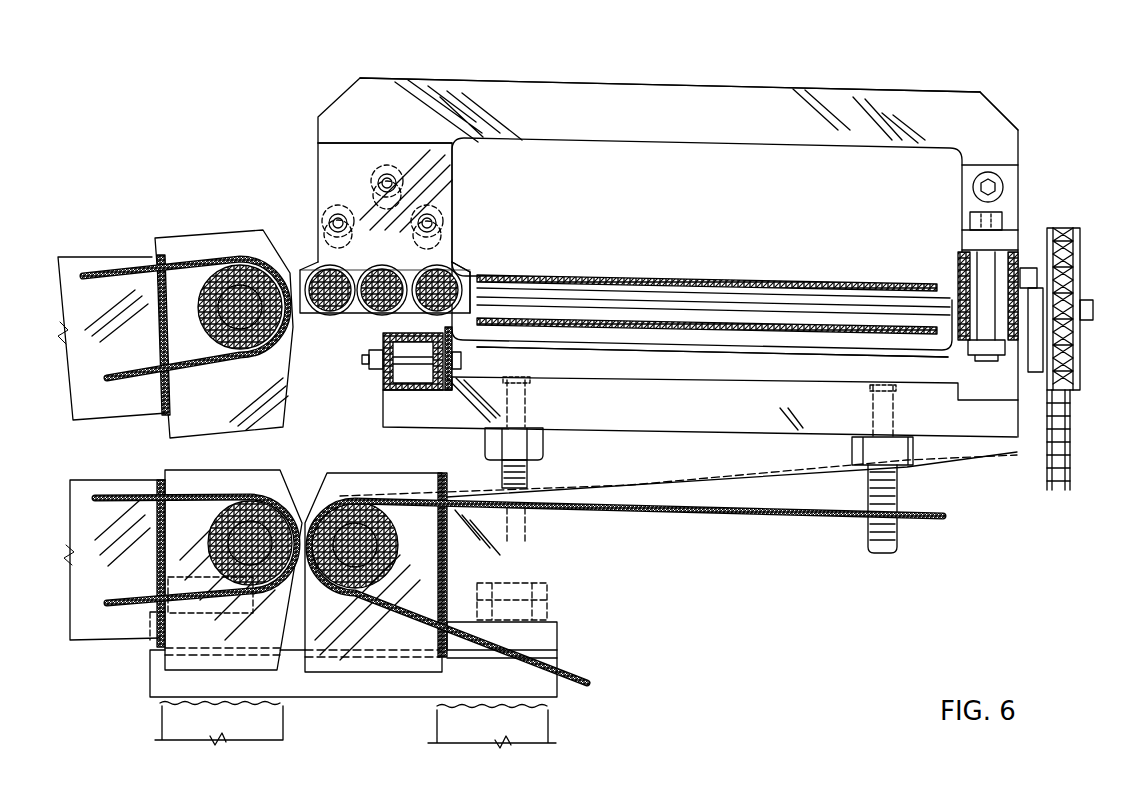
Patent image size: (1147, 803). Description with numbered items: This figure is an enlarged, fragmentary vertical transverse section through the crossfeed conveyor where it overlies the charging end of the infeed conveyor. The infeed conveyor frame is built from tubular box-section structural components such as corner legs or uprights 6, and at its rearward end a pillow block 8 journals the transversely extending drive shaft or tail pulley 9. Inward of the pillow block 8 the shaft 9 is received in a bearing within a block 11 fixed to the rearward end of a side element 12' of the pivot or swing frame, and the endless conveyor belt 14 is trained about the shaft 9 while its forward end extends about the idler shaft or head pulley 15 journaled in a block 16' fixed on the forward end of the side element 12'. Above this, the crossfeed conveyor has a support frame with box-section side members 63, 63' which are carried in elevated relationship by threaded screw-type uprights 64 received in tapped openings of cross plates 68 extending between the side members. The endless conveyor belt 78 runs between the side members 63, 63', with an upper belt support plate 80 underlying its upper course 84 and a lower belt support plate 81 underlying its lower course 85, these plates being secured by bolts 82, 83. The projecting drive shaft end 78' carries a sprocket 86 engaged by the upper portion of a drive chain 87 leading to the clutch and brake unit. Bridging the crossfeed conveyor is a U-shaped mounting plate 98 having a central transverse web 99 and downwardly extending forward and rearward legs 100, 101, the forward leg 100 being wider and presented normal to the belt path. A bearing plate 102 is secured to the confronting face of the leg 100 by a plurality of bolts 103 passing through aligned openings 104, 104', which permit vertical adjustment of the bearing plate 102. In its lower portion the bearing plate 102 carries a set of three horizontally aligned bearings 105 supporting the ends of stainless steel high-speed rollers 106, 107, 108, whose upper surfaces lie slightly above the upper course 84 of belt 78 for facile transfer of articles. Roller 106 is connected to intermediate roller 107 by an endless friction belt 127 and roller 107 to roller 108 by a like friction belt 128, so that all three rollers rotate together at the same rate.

The U-shaped mounting plate 98 is at (659, 82).
The central transverse web 99 is at (692, 93).
The rearward leg 101 is at (1018, 142).
The forward leg 100 is at (318, 127).
The bearing plate 102 is at (348, 142).
The bolts 103 is at (385, 177).
The opening 104 is at (336, 173).
The opening 104' is at (334, 191).
The roller 107 is at (315, 265).
The roller 108 is at (350, 262).
The endless friction belt 127 is at (423, 262).
The endless friction belt 128 is at (357, 315).
The bearings 105 is at (463, 270).
The roller 106 is at (462, 268).
The endless conveyor belt 78 is at (694, 244).
The upper course 84 is at (622, 280).
The upper belt support plate 80 is at (640, 298).
The lower course 85 is at (657, 323).
The lower belt support plate 81 is at (670, 347).
The side member 63 is at (1045, 263).
The corner legs or uprights 6 is at (1013, 248).
The bolts 82 is at (1033, 277).
The sprocket 86 is at (1077, 287).
The drive chain 87 is at (1072, 428).
The drive shaft end 78' is at (1113, 305).
The side member 63' is at (388, 374).
The bolts 83 is at (368, 362).
The cross plate 68 is at (383, 417).
The screw-type upright 64 is at (500, 473).
The block 16' is at (197, 429).
The side element 12' is at (252, 475).
The idler shaft or head pulley 15 is at (217, 267).
The drive shaft or tail pulley 9 is at (340, 587).
The endless conveyor belt 14 is at (83, 275).
The block 11 is at (357, 673).
The pillow block 8 is at (557, 625).